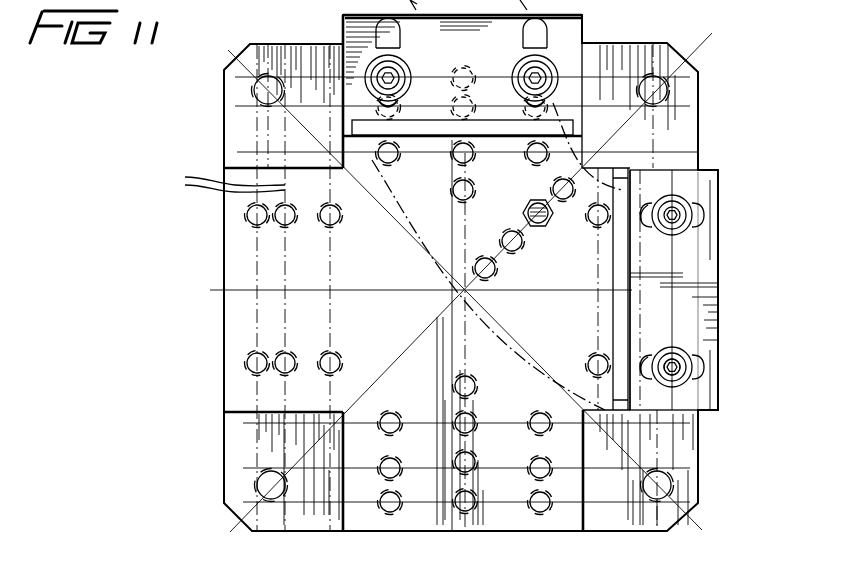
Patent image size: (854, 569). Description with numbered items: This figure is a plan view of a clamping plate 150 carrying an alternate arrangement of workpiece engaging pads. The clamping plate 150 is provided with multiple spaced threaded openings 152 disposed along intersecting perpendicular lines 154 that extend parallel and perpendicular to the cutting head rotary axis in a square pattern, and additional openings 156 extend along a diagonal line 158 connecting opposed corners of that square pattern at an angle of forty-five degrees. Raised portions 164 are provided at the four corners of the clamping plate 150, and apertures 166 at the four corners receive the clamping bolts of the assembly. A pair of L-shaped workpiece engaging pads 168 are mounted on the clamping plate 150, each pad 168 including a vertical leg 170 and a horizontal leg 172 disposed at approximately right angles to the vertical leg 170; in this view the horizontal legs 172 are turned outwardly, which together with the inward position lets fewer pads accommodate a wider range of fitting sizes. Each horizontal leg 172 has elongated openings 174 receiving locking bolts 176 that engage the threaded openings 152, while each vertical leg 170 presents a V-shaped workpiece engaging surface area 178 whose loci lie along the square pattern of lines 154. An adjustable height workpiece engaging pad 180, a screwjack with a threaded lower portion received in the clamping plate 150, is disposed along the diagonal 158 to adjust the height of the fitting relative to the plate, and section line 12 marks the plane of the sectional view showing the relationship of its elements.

The section line 12- 12 is at (251, 257).
The clamping plate 150 is at (238, 327).
The threaded openings 152 is at (338, 218).
The intersecting perpendicular lines 154 is at (215, 179).
The additional openings 156 is at (494, 275).
The diagonal line 158 is at (403, 357).
The raised portions 164 is at (682, 127).
The apertures 166 is at (670, 482).
The workpiece engaging pad 168 is at (722, 302).
The vertical leg 170 is at (505, 137).
The horizontal leg 172 is at (570, 30).
The elongated openings 174 is at (373, 35).
The locking bolts 176 is at (685, 380).
The V-shaped workpiece engaging surface area 178 is at (432, 126).
The adjustable height workpiece engaging pad 180 is at (522, 217).